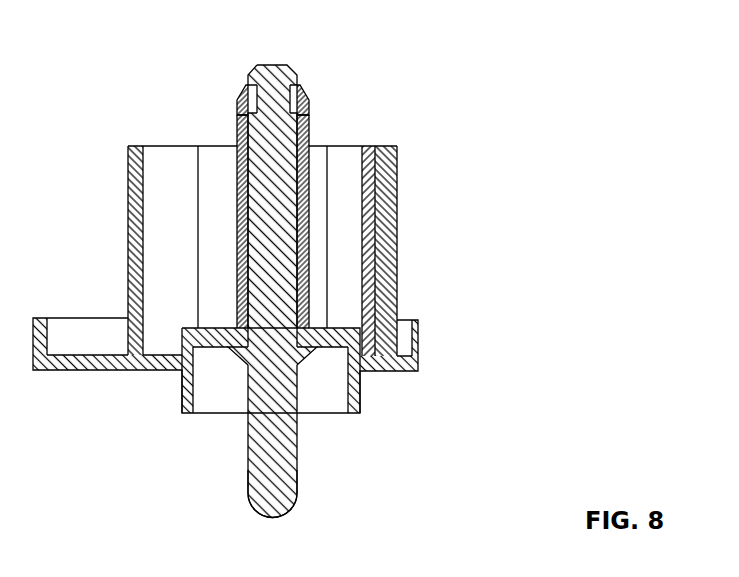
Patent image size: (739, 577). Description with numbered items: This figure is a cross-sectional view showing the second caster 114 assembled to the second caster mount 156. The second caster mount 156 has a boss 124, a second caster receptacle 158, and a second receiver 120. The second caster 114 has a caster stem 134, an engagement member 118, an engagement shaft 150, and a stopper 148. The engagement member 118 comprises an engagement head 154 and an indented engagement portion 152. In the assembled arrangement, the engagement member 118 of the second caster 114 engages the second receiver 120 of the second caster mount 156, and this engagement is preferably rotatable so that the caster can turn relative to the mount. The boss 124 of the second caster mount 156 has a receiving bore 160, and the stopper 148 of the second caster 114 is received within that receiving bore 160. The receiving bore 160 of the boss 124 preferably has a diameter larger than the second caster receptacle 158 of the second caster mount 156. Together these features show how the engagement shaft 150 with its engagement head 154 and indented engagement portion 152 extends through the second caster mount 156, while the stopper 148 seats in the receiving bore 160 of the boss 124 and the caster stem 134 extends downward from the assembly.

The second caster 114 is at (212, 477).
The engagement member 118 is at (250, 79).
The second receiver 120 is at (311, 109).
The boss 124 is at (360, 385).
The caster stem 134 is at (300, 471).
The stopper 148 is at (188, 393).
The engagement shaft 150 is at (220, 277).
The indented engagement portion 152 is at (256, 104).
The engagement head 154 is at (273, 64).
The second caster mount 156 is at (395, 126).
The second caster receptacle 158 is at (300, 227).
The receiving bore 160 is at (318, 400).